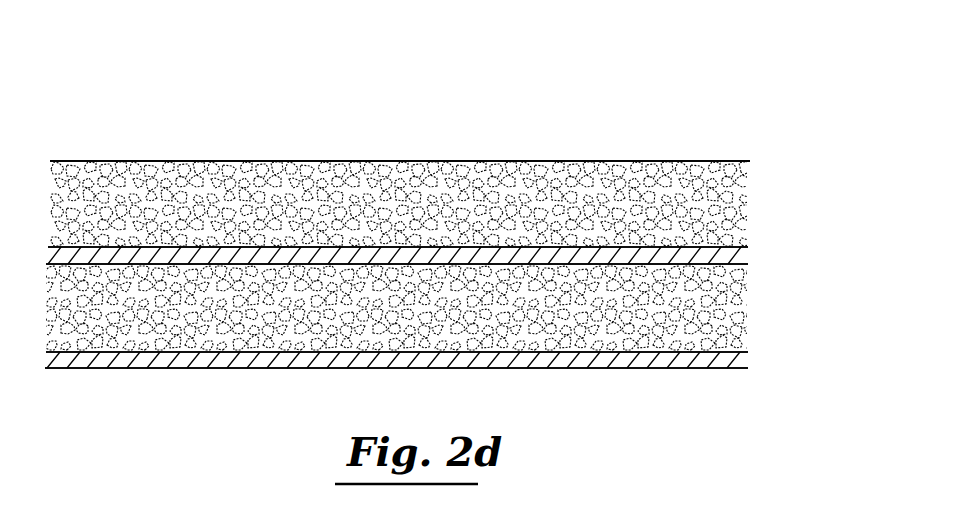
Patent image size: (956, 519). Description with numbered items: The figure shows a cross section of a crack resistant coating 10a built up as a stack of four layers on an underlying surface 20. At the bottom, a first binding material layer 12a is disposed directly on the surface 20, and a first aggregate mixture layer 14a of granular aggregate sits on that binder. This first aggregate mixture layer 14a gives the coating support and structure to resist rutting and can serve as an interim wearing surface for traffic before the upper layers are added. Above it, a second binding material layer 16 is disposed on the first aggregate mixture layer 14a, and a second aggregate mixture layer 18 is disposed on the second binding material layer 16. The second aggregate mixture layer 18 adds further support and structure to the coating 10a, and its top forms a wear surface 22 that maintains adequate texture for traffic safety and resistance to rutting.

The crack resistant coating 10a is at (121, 112).
The wear surface 22 is at (601, 152).
The second aggregate mixture layer 18 is at (750, 208).
The second binding material layer 16 is at (748, 257).
The first aggregate mixture layer 14a is at (750, 312).
The first binding material layer 12a is at (746, 361).
The surface 20 is at (202, 370).